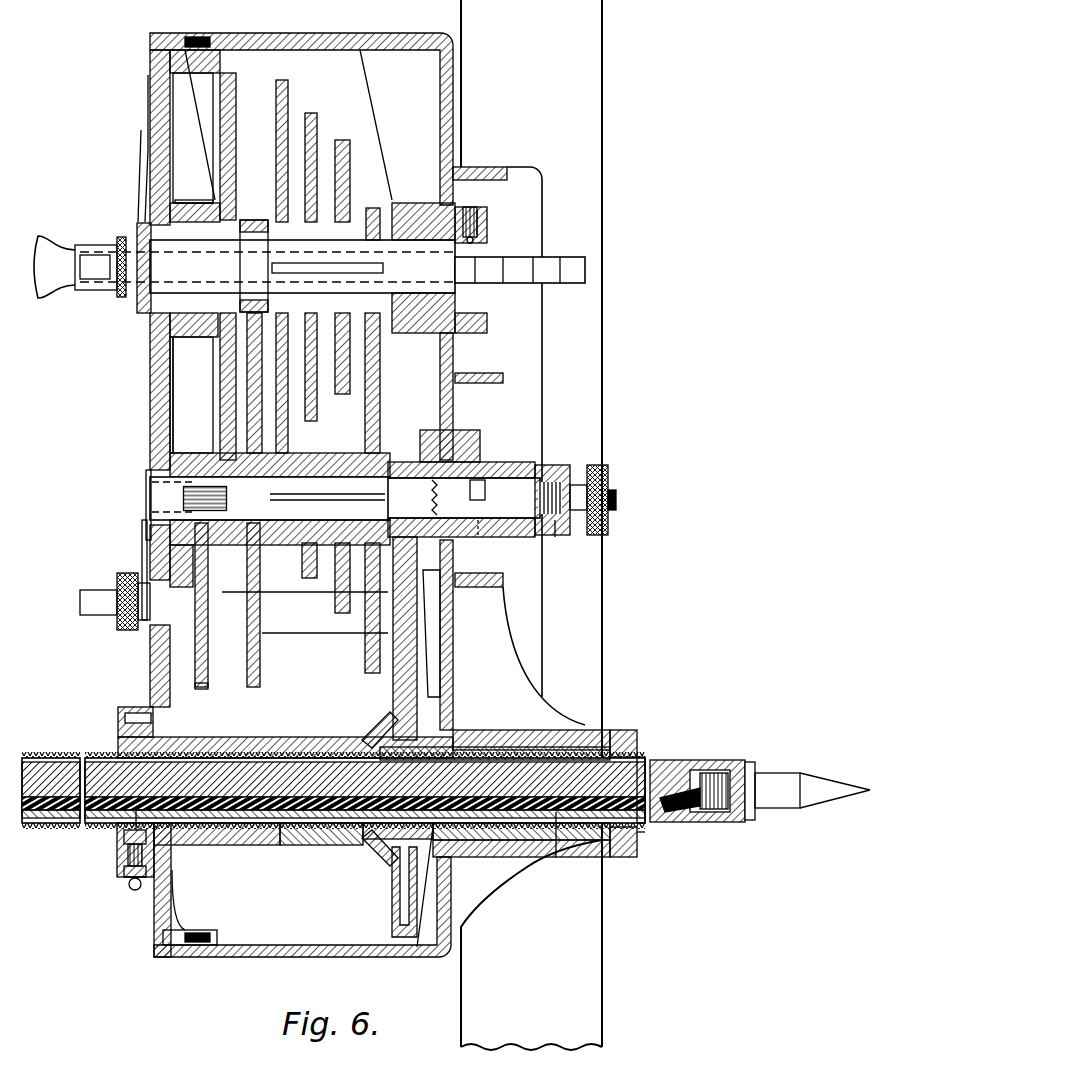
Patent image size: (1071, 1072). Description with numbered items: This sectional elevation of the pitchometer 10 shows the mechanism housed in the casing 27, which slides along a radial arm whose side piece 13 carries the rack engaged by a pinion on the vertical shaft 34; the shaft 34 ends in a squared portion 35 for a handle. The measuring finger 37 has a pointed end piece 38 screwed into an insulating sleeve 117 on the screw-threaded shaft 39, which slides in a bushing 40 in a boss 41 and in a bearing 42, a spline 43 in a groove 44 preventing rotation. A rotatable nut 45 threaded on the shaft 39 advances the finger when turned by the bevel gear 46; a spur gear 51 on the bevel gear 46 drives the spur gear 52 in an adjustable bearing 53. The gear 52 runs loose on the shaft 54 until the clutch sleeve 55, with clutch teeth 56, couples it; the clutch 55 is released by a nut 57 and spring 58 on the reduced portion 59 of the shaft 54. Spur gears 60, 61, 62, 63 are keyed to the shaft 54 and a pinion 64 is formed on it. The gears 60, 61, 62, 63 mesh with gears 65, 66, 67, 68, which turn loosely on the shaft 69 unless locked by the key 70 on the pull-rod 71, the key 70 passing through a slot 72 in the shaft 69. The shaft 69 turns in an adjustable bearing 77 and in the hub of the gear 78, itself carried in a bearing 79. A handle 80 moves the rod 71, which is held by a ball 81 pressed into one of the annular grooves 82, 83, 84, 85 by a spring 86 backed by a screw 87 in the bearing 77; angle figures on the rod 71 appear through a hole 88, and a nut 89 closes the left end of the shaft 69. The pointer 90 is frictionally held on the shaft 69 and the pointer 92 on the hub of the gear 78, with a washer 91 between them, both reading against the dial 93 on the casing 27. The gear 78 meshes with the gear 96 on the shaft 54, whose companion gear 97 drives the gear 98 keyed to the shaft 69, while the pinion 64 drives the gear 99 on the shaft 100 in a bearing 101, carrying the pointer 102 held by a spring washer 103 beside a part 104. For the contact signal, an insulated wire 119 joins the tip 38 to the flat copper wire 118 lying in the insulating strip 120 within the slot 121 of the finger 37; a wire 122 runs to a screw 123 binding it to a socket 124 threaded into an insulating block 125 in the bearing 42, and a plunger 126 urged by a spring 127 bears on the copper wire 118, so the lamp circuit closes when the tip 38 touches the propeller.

The machine frame 10 is at (551, 692).
The side piece of the arm 13 is at (588, 84).
The casing 27 is at (395, 40).
The vertical shaft 34 is at (305, 640).
The squared portion 35 is at (82, 620).
The measuring finger 37 is at (777, 808).
The end piece 38 is at (805, 783).
The screw-threaded shaft 39 is at (643, 760).
The bushing 40 is at (626, 730).
The boss 41 is at (487, 740).
The bearing 42 is at (132, 708).
The spline 43 is at (205, 758).
The groove 44 is at (58, 758).
The rotatable nut 45 is at (318, 830).
The bevel gear 46 is at (375, 855).
The spur gear 51 is at (398, 915).
The spur gear 52 is at (407, 597).
The adjustable bearing 53 is at (480, 445).
The shaft 54 is at (460, 500).
The clutch sleeve 55 is at (555, 466).
The clutch teeth 56 is at (482, 537).
The nut 57 is at (608, 480).
The spring 58 is at (560, 537).
The reduced portion 59 is at (617, 500).
The spur gear 60 is at (372, 675).
The spur gear 61 is at (342, 615).
The spur gear 62 is at (312, 580).
The spur gear 63 is at (302, 552).
The pinion 64 is at (218, 498).
The gear 65 is at (372, 207).
The gear 66 is at (343, 155).
The gear 67 is at (312, 118).
The gear 68 is at (285, 82).
The shaft 69 is at (415, 240).
The key 70 is at (380, 262).
The pull-rod 71 is at (587, 270).
The slot 72 is at (318, 270).
The adjustable bearing 77 is at (470, 333).
The gear 78 is at (236, 95).
The bearing 79 is at (190, 203).
The handle 80 is at (47, 288).
The ball 81 is at (472, 240).
The annular groove 82 is at (470, 272).
The annular groove 83 is at (500, 265).
The annular groove 84 is at (535, 275).
The annular groove 85 is at (562, 262).
The spring 86 is at (480, 215).
The screw 87 is at (472, 210).
The hole 88 is at (96, 280).
The nut 89 is at (120, 238).
The pointer 90 is at (146, 122).
The washer 91 is at (138, 300).
The pointer 92 is at (140, 172).
The dial 93 is at (152, 400).
The gear 96 is at (210, 535).
The gear 97 is at (254, 688).
The gear 98 is at (254, 222).
The gear 99 is at (203, 690).
The shaft 100 is at (140, 615).
The bearing 101 is at (170, 555).
The pointer 102 is at (143, 530).
The spring washer 103 is at (165, 600).
The plate 104 is at (147, 500).
The sleeve of insulating material 117 is at (735, 766).
The flat copper wire 118 is at (556, 858).
The insulated wire 119 is at (680, 815).
The strip of insulating material 120 is at (322, 752).
The slot 121 is at (640, 840).
The wire 122 is at (128, 880).
The screw 123 is at (133, 892).
The socket 124 is at (124, 872).
The insulating block 125 is at (124, 838).
The plunger 126 is at (130, 830).
The spring 127 is at (128, 855).